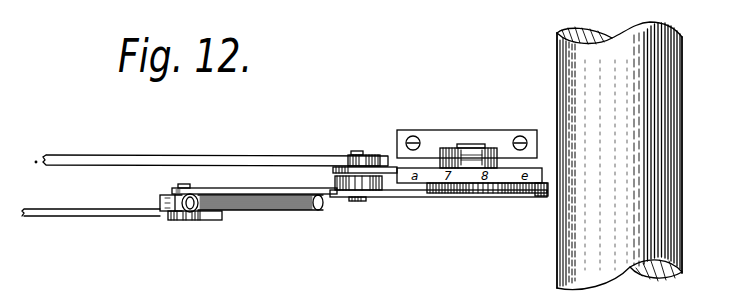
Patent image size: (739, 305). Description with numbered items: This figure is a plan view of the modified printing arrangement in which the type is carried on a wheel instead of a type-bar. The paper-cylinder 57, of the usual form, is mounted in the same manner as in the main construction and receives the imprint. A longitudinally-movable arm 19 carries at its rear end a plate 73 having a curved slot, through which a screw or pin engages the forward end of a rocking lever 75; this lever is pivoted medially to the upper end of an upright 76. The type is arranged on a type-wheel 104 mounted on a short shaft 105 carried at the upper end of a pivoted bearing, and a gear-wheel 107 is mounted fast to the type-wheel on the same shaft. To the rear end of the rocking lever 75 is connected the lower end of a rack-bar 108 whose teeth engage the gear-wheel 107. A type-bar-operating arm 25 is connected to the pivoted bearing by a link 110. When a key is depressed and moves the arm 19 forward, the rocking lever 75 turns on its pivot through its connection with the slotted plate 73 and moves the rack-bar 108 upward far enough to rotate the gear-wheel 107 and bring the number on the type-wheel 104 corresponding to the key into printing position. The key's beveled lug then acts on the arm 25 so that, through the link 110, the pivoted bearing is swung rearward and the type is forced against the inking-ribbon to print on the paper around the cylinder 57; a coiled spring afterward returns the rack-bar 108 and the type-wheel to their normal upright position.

The longitudinally-movable arm 19 is at (157, 217).
The type-bar-operating arm 25 is at (235, 156).
The paper-cylinder 57 is at (557, 70).
The plate 73 is at (272, 207).
The rocking lever 75 is at (403, 198).
The upright 76 is at (375, 194).
The type-wheel 104 is at (504, 172).
The short shaft 105 is at (466, 156).
The gear-wheel 107 is at (440, 193).
The rack-bar 108 is at (520, 190).
The link 110 is at (388, 161).